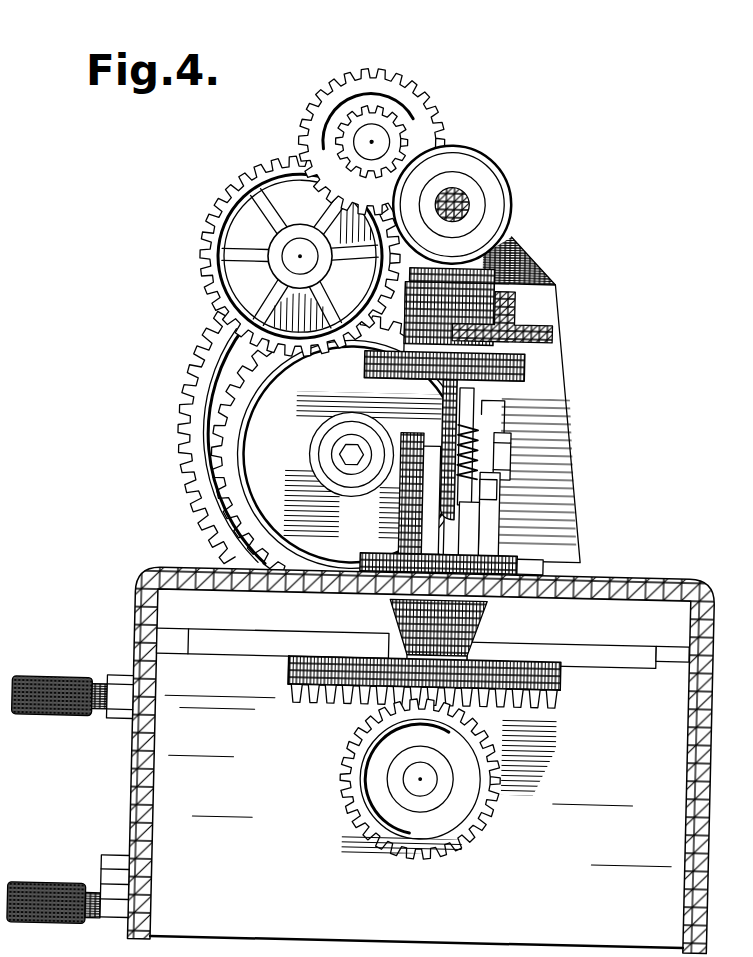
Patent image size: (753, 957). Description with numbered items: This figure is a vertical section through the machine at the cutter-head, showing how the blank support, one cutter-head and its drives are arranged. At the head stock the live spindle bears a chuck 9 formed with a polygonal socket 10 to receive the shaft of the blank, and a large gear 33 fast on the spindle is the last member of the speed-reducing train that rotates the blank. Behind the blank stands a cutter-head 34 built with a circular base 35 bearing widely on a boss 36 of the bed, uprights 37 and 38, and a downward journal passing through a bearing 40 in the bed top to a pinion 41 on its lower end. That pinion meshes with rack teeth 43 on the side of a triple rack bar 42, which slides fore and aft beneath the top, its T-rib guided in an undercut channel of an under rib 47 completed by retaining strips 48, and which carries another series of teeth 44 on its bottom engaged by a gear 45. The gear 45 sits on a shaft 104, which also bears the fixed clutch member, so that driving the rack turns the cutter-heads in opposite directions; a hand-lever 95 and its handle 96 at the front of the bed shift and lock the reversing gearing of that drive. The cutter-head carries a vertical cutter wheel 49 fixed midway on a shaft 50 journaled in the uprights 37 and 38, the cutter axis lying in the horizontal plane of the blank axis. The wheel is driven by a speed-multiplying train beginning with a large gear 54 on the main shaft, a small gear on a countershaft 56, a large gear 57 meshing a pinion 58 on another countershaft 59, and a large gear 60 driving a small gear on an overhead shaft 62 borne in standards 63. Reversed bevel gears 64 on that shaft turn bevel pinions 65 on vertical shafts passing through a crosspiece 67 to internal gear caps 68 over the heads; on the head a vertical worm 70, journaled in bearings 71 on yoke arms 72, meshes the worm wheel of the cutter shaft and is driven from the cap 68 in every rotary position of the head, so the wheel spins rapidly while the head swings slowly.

The chuck 9 is at (325, 427).
The polygonal socket 10 is at (330, 452).
The large gear 33 is at (212, 384).
The cutter-head 34 is at (507, 503).
The circular base 35 is at (362, 563).
The boss 36 is at (380, 573).
The upright 37 is at (403, 507).
The upright 38 is at (503, 487).
The bearing 40 is at (480, 628).
The pinion 41 is at (495, 690).
The triple rack bar 42 is at (285, 687).
The rack teeth 43 is at (562, 681).
The teeth 44 is at (333, 707).
The gear 45 is at (347, 800).
The under rib 47 is at (192, 617).
The retaining strip 48 is at (643, 665).
The cutter wheel 49 is at (441, 415).
The shaft 50 is at (510, 447).
The large gear 54 is at (182, 484).
The countershaft 56 is at (287, 257).
The large gear 57 is at (257, 163).
The pinion 58 is at (361, 120).
The countershaft 59 is at (375, 142).
The large gear 60 is at (417, 92).
The shaft 62 is at (468, 205).
The standard 63 is at (528, 263).
The bevel gear 64 is at (480, 157).
The bevel pinion 65 is at (500, 275).
The crosspiece 67 is at (513, 323).
The internal gear cap 68 is at (527, 367).
The worm 70 is at (490, 423).
The bearing 71 is at (465, 417).
The yoke arm 72 is at (482, 430).
The hand-lever 95 is at (113, 907).
The handle 96 is at (45, 908).
The shaft 104 is at (413, 790).